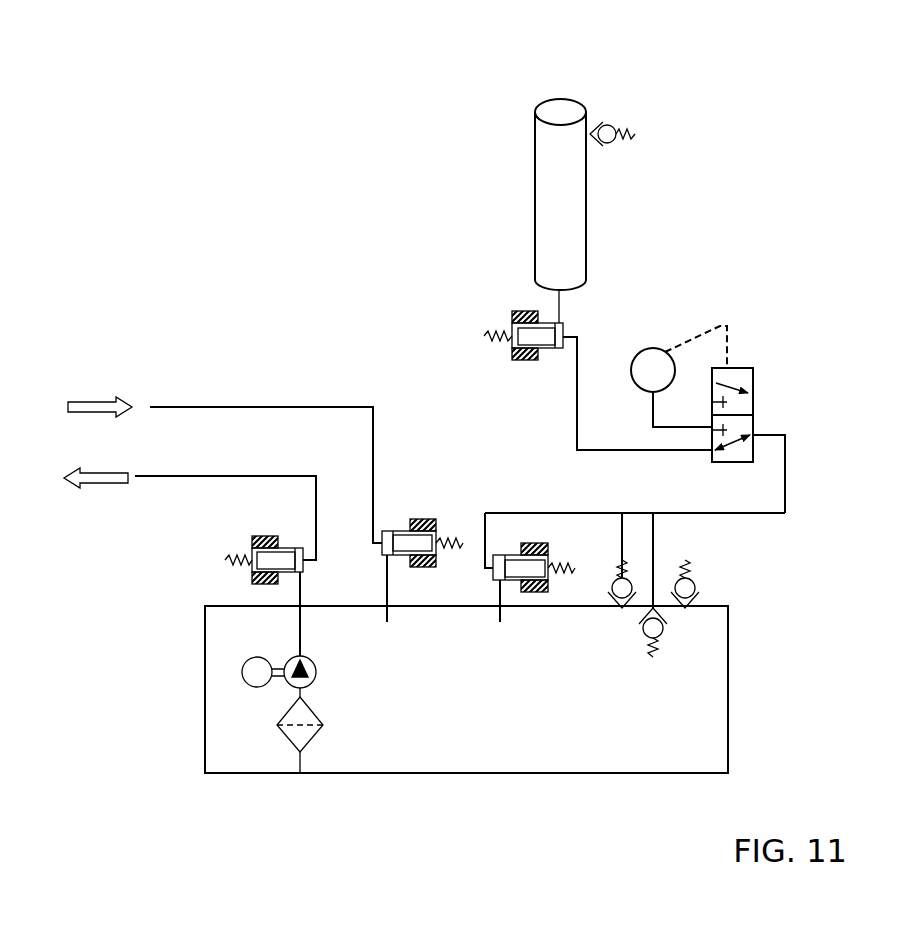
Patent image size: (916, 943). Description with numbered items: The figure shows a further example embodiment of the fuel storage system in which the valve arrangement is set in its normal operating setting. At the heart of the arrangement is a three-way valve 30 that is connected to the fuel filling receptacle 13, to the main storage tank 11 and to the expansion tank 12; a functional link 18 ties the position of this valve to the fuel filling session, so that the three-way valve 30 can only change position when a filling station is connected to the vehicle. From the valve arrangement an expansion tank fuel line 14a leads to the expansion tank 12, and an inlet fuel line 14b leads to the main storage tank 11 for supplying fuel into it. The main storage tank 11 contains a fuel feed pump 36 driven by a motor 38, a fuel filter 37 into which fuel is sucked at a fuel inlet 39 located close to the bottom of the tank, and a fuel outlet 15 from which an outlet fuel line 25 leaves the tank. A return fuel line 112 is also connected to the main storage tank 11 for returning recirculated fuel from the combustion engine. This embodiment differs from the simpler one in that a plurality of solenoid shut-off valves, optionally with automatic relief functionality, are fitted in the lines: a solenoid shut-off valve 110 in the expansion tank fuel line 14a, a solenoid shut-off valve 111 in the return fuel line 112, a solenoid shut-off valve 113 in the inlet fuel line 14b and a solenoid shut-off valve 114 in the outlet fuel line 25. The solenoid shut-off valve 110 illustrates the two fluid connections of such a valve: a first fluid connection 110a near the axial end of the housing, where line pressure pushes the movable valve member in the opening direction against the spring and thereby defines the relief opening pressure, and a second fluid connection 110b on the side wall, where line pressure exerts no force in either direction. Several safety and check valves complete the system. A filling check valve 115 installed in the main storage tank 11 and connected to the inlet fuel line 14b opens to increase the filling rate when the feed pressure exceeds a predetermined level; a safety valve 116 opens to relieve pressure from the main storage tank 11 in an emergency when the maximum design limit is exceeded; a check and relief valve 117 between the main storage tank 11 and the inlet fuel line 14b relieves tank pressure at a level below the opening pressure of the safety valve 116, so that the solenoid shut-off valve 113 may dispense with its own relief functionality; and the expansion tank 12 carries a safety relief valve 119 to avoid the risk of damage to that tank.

The main storage tank 11 is at (213, 771).
The expansion tank 12 is at (552, 183).
The fuel filling receptacle 13 is at (653, 365).
The expansion tank fuel line 14a is at (572, 405).
The inlet fuel line 14b is at (785, 430).
The fuel outlet 15 is at (302, 607).
The functional link 18 is at (723, 322).
The outlet fuel line 25 is at (247, 476).
The three-way valve 30 is at (763, 340).
The fuel feed pump 36 is at (316, 680).
The fuel filter 37 is at (303, 728).
The motor 38 is at (265, 686).
The fuel inlet 39 is at (302, 755).
The solenoid shut-off valve 110 is at (530, 338).
The first fluid connection 110a is at (575, 335).
The second fluid connection 110b is at (568, 327).
The solenoid shut-off valve 111 is at (425, 530).
The return fuel line 112 is at (177, 407).
The solenoid shut-off valve 113 is at (545, 585).
The solenoid shut-off valve 114 is at (226, 561).
The filling check valve 115 is at (660, 635).
The safety valve 116 is at (695, 590).
The check and relief valve 117 is at (622, 560).
The safety relief valve 119 is at (633, 128).